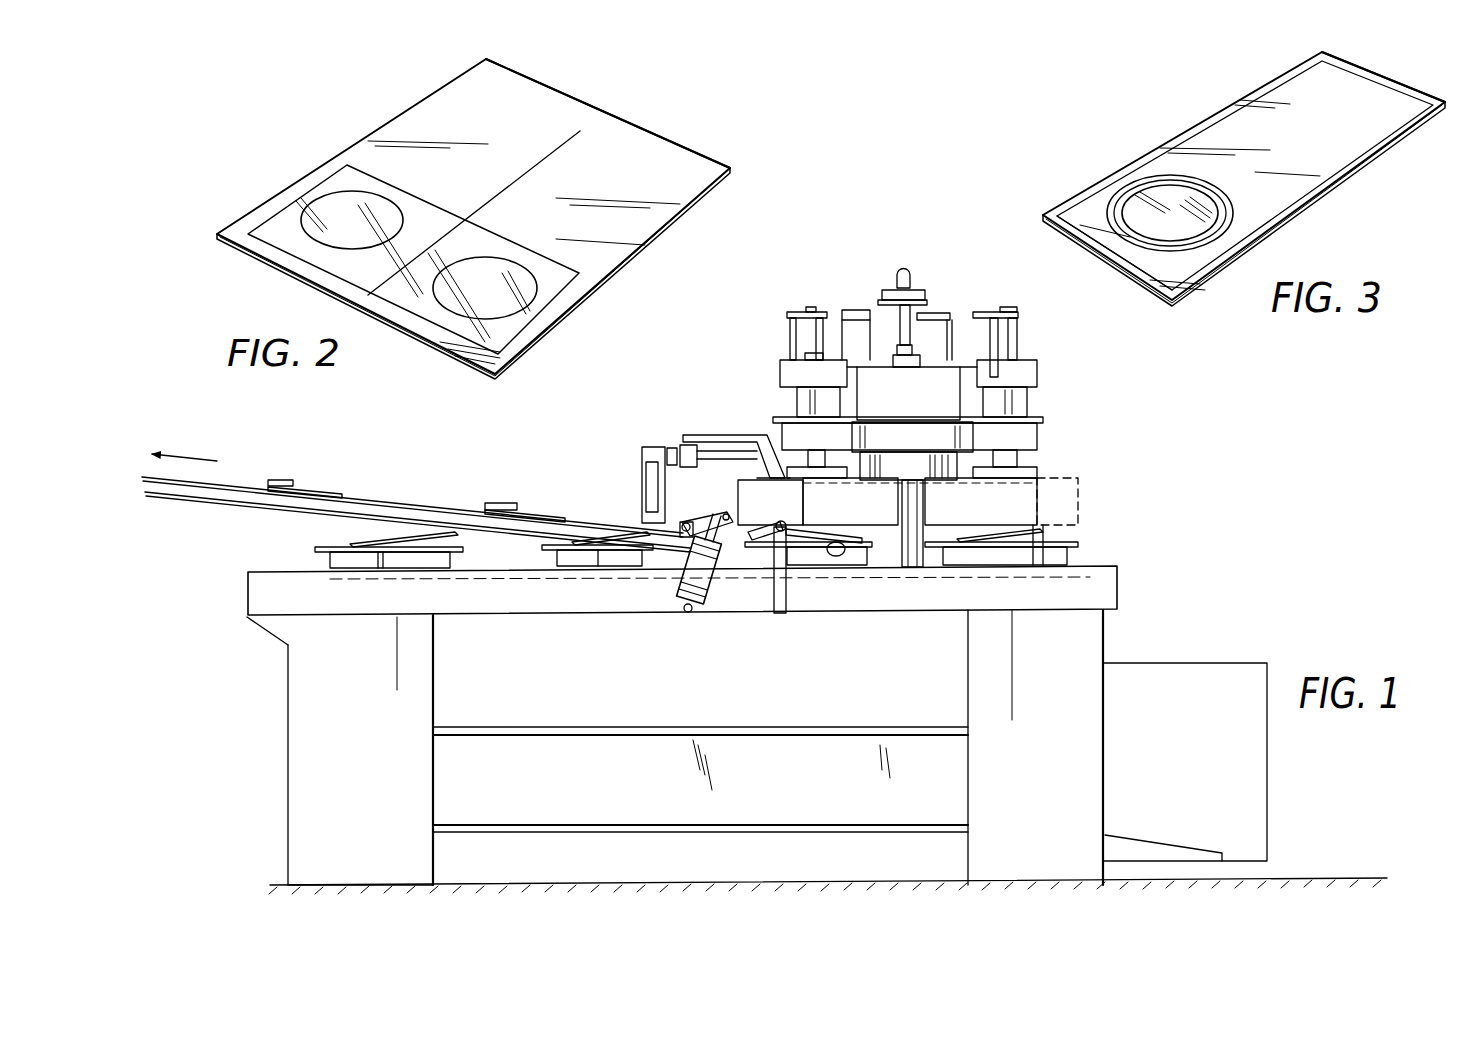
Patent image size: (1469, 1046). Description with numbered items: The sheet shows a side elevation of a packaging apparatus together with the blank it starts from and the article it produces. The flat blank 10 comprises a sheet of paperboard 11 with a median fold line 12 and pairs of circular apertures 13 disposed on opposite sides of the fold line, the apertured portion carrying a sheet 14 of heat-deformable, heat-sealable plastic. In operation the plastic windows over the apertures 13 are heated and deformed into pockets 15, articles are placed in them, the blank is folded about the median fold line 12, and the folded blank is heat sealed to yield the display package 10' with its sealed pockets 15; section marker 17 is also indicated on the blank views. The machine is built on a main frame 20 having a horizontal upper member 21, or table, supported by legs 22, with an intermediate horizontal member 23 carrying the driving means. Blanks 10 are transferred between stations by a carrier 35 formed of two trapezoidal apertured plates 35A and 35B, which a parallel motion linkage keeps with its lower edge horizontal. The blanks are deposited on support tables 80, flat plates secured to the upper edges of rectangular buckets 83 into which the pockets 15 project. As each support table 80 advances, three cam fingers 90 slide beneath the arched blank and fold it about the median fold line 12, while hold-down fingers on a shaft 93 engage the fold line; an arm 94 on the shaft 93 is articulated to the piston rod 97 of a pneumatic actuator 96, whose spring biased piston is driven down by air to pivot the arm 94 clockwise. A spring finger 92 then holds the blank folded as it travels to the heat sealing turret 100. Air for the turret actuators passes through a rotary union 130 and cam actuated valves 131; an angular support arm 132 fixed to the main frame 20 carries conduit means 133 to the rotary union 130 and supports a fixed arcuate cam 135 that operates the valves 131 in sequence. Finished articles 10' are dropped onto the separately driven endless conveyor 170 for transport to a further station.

In FIG. 2, the blank 10 is at (483, 219).
In FIG. 3, the display package 10' is at (1244, 179).
In FIG. 1, the display package 10' is at (424, 487).
In FIG. 2, the sheet of paperboard 11 is at (690, 180).
In FIG. 3, the sheet of paperboard 11 is at (1362, 145).
In FIG. 2, the median fold line 12 is at (580, 131).
In FIG. 3, the median fold line 12 is at (1345, 182).
In FIG. 2, the apertures 13 is at (323, 208).
In FIG. 3, the apertures 13 is at (1233, 213).
In FIG. 2, the sheet of heat-deformable and heat-sealable plastic 14 is at (560, 277).
In FIG. 3, the pockets 15 is at (1195, 222).
In FIG. 1, the pockets 15 is at (290, 481).
In FIG. 2, the section line 17 is at (723, 264).
In FIG. 3, the section line 17 is at (1052, 262).
In FIG. 1, the main frame 20 is at (1127, 630).
In FIG. 1, the upper member 21 is at (1112, 582).
In FIG. 1, the legs 22 is at (412, 685).
In FIG. 1, the intermediate horizontal member 23 is at (752, 742).
In FIG. 1, the carrier 35 is at (638, 488).
In FIG. 1, the plate 35A is at (643, 455).
In FIG. 1, the plate 35B is at (668, 452).
In FIG. 1, the support tables 80 is at (320, 548).
In FIG. 1, the buckets 83 is at (440, 558).
In FIG. 1, the cam fingers 90 is at (760, 530).
In FIG. 1, the spring finger 92 is at (873, 538).
In FIG. 1, the shaft 93 is at (684, 521).
In FIG. 1, the arm 94 is at (705, 518).
In FIG. 1, the pneumatic actuator 96 is at (707, 600).
In FIG. 1, the piston rod 97 is at (720, 548).
In FIG. 1, the heat sealing turret 100 is at (918, 263).
In FIG. 1, the rotary union 130 is at (908, 367).
In FIG. 1, the cam actuated valves 131 is at (864, 311).
In FIG. 1, the angular support arm 132 is at (935, 303).
In FIG. 1, the conduit means 133 is at (911, 280).
In FIG. 1, the fixed arcuate cam 135 is at (965, 312).
In FIG. 1, the endless conveyor 170 is at (407, 503).